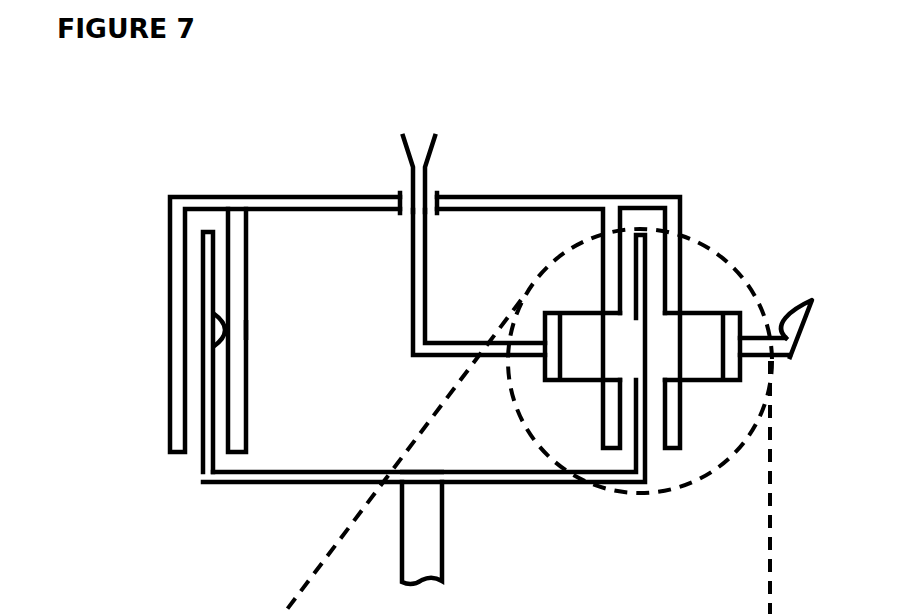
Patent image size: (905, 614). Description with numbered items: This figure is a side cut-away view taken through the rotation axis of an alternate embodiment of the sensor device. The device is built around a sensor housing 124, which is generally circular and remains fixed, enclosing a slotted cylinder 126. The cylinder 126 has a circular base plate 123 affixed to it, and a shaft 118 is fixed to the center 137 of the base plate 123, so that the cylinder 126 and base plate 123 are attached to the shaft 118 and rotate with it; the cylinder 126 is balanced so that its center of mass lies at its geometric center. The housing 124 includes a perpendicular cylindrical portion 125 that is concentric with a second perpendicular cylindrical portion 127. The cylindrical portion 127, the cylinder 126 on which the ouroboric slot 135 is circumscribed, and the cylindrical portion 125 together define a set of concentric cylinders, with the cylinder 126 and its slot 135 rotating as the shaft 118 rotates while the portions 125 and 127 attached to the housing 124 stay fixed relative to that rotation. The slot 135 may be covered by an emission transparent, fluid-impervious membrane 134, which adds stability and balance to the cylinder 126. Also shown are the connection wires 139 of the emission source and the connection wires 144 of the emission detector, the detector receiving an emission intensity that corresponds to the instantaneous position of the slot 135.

The shaft 118 is at (440, 532).
The base plate 123 is at (302, 480).
The sensor housing 124 is at (563, 195).
The perpendicular cylindrical portion 125 is at (237, 262).
The slotted cylinder 126 is at (203, 410).
The second perpendicular cylindrical portion 127 is at (173, 258).
The emission transparent fluid-impervious membrane 134 is at (210, 330).
The ouroboric slot 135 is at (222, 330).
The center of base plate 137 is at (413, 472).
The connection wires 139 is at (412, 282).
The connection wires 144 is at (789, 317).